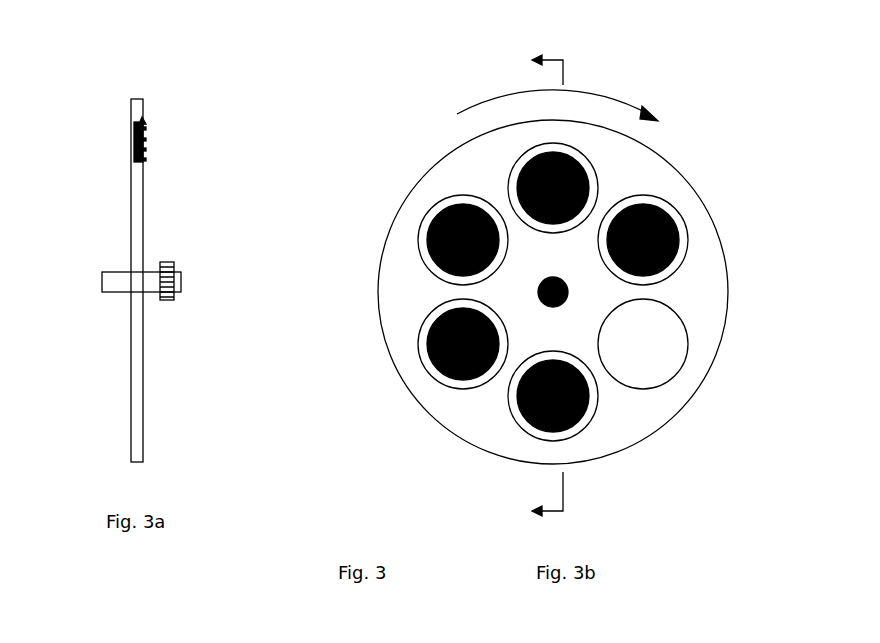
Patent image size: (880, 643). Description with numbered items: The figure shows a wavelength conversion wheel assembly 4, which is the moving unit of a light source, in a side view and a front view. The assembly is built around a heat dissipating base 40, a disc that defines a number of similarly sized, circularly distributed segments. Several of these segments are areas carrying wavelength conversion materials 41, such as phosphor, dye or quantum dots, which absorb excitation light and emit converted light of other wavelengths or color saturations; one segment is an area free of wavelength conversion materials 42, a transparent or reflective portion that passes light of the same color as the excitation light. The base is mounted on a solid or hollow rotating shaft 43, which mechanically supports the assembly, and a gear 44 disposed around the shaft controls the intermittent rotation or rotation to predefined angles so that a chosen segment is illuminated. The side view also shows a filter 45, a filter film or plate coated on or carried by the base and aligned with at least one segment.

In FIG. 3A, the wavelength conversion wheel assembly 4 is at (56, 328).
In FIG. 3A, the heat dissipating base 40 is at (131, 109).
In FIG. 3B, the heat dissipating base 40 is at (437, 164).
In FIG. 3B, the areas carrying wavelength conversion materials 41 is at (588, 175).
In FIG. 3B, the area free of wavelength conversion materials 42 is at (688, 356).
In FIG. 3A, the rotating shaft 43 is at (104, 282).
In FIG. 3B, the rotating shaft 43 is at (568, 290).
In FIG. 3A, the gear 44 is at (166, 262).
In FIG. 3A, the filter 45 is at (147, 121).